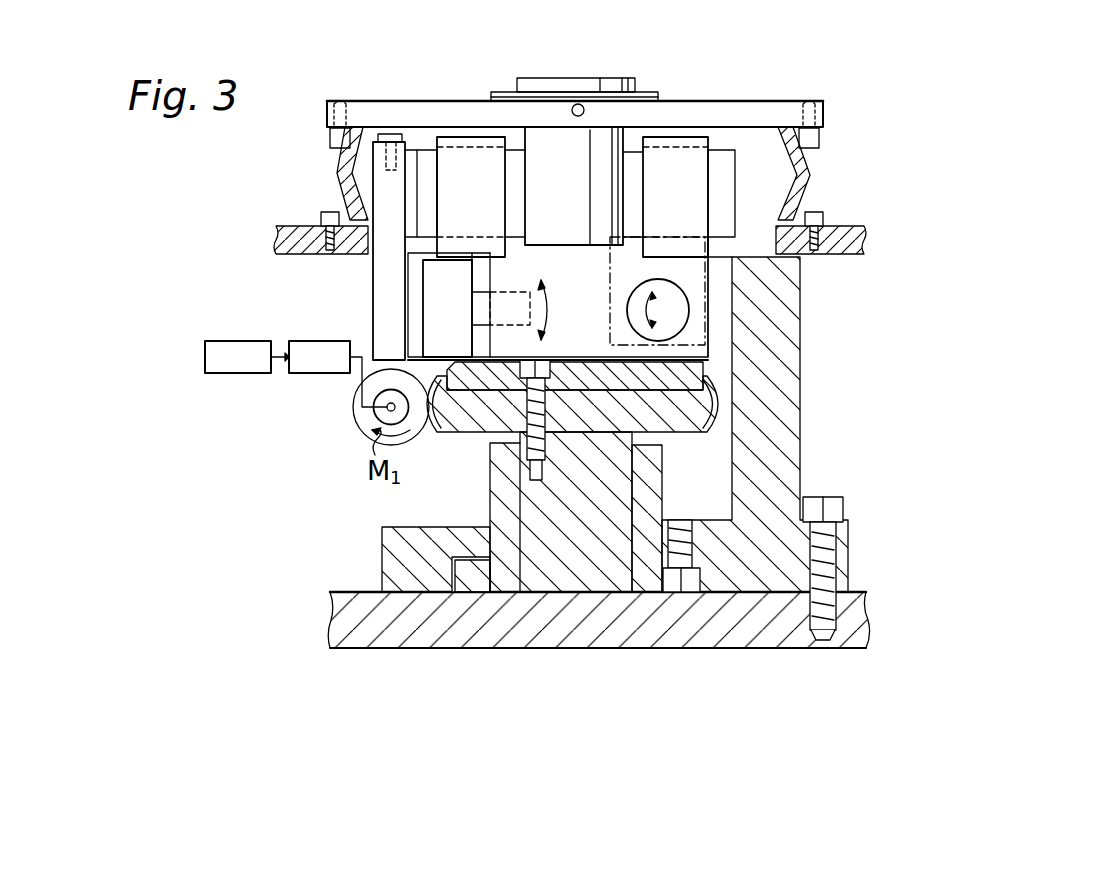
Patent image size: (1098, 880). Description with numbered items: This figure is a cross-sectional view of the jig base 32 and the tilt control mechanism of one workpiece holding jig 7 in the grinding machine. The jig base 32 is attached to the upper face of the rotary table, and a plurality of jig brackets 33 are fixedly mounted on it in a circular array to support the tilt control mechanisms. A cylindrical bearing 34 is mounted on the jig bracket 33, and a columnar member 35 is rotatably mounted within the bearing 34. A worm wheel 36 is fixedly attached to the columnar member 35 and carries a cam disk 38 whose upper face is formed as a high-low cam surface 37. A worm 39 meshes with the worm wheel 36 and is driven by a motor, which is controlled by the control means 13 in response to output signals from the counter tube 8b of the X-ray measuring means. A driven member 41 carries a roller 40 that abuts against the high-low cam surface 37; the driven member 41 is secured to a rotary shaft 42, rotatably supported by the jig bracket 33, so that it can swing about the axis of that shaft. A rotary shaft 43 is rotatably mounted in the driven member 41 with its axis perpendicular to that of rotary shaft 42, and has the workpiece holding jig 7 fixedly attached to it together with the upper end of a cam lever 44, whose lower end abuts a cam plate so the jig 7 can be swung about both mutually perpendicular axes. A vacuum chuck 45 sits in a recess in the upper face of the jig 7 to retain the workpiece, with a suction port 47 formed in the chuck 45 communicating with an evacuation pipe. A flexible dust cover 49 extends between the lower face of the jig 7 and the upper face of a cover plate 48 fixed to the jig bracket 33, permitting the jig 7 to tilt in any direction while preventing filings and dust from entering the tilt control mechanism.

The workpiece holding jig 7 is at (732, 108).
The counter tube 8b is at (238, 357).
The control means 13 is at (306, 362).
The jig base 32 is at (557, 634).
The jig bracket 33 is at (784, 406).
The cylindrical bearing 34 is at (477, 583).
The columnar member 35 is at (600, 583).
The worm wheel 36 is at (707, 430).
The high-low cam surface 37 is at (703, 348).
The cam disk 38 is at (597, 380).
The worm 39 is at (352, 417).
The roller 40 is at (460, 277).
The driven member 41 is at (700, 308).
The rotary shaft 42 is at (656, 280).
The rotary shaft 43 is at (383, 193).
The cam lever 44 is at (380, 302).
The vacuum chuck 45 is at (584, 63).
The suction port 47 is at (584, 110).
The cover plate 48 is at (286, 248).
The flexible dust cover 49 is at (343, 172).